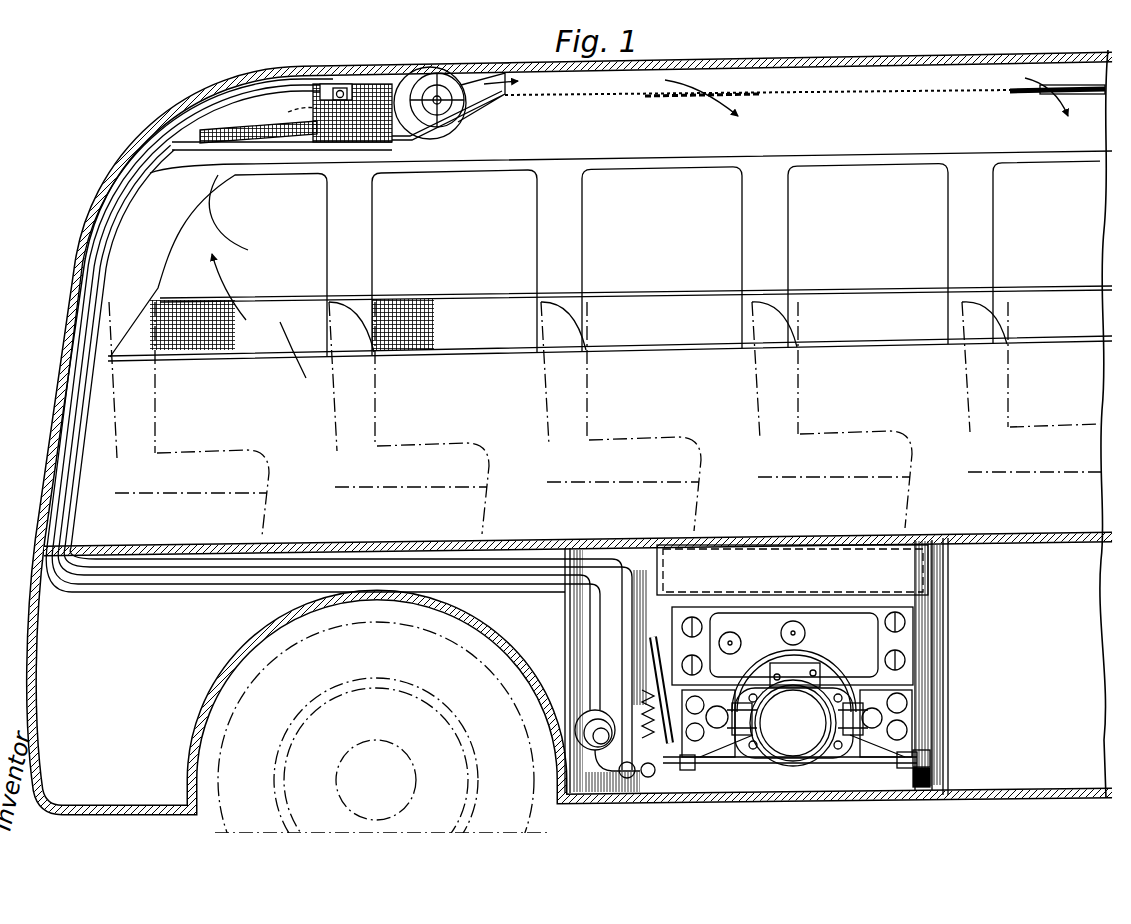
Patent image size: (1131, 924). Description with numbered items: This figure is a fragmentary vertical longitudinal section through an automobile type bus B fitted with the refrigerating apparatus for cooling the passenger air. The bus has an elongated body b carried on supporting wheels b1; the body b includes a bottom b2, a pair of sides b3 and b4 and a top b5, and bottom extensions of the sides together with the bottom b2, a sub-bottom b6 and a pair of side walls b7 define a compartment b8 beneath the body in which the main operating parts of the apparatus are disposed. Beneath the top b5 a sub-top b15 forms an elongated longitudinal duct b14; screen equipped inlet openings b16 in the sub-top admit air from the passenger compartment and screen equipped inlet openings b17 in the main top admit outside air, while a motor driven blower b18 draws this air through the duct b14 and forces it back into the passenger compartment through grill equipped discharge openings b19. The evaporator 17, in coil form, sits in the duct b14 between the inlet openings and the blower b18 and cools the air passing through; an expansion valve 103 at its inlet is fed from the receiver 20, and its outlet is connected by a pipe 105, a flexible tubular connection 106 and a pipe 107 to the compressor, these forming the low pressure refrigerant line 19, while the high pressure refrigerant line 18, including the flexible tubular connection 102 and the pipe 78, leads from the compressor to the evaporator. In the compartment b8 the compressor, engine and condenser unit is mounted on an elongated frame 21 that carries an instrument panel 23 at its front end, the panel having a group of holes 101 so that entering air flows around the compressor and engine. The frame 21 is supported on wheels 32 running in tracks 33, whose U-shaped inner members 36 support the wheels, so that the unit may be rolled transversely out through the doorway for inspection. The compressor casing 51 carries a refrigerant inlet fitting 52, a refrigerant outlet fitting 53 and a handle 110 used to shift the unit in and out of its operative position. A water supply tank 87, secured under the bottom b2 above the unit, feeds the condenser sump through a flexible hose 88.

The body b is at (55, 422).
The bus B is at (560, 257).
The supporting wheels b1 is at (382, 773).
The bottom b2 is at (418, 546).
The side b3 is at (565, 625).
The side b4 is at (770, 222).
The top b5 is at (800, 62).
The sub-bottom b6 is at (755, 800).
The side walls b7 is at (945, 590).
The compartment b8 is at (930, 625).
The duct b14 is at (928, 76).
The sub-top b15 is at (877, 92).
The inlet openings b16 is at (278, 182).
The inlet openings b17 is at (227, 124).
The motor driven blower b18 is at (470, 78).
The discharge openings b19 is at (885, 98).
The evaporator 17 is at (383, 84).
The high pressure refrigerant line 18 is at (118, 205).
The low pressure refrigerant line 19 is at (205, 568).
The receiver 20 is at (595, 730).
The frame 21 is at (690, 775).
The instrument panel 23 is at (900, 638).
The wheels 32 is at (935, 778).
The tracks 33 is at (935, 757).
The inner members 36 is at (912, 772).
The casing 51 is at (794, 723).
The refrigerant inlet fitting 52 is at (870, 742).
The refrigerant outlet fitting 53 is at (790, 730).
The pipe 78 is at (702, 738).
The supply tank 87 is at (792, 570).
The flexible hose 88 is at (660, 598).
The holes 101 is at (900, 733).
The flexible tubular connection 102 is at (277, 97).
The expansion valve 103 is at (338, 86).
The pipe 105 is at (113, 270).
The flexible tubular connection 106 is at (640, 686).
The pipe 107 is at (690, 648).
The handle 110 is at (810, 665).